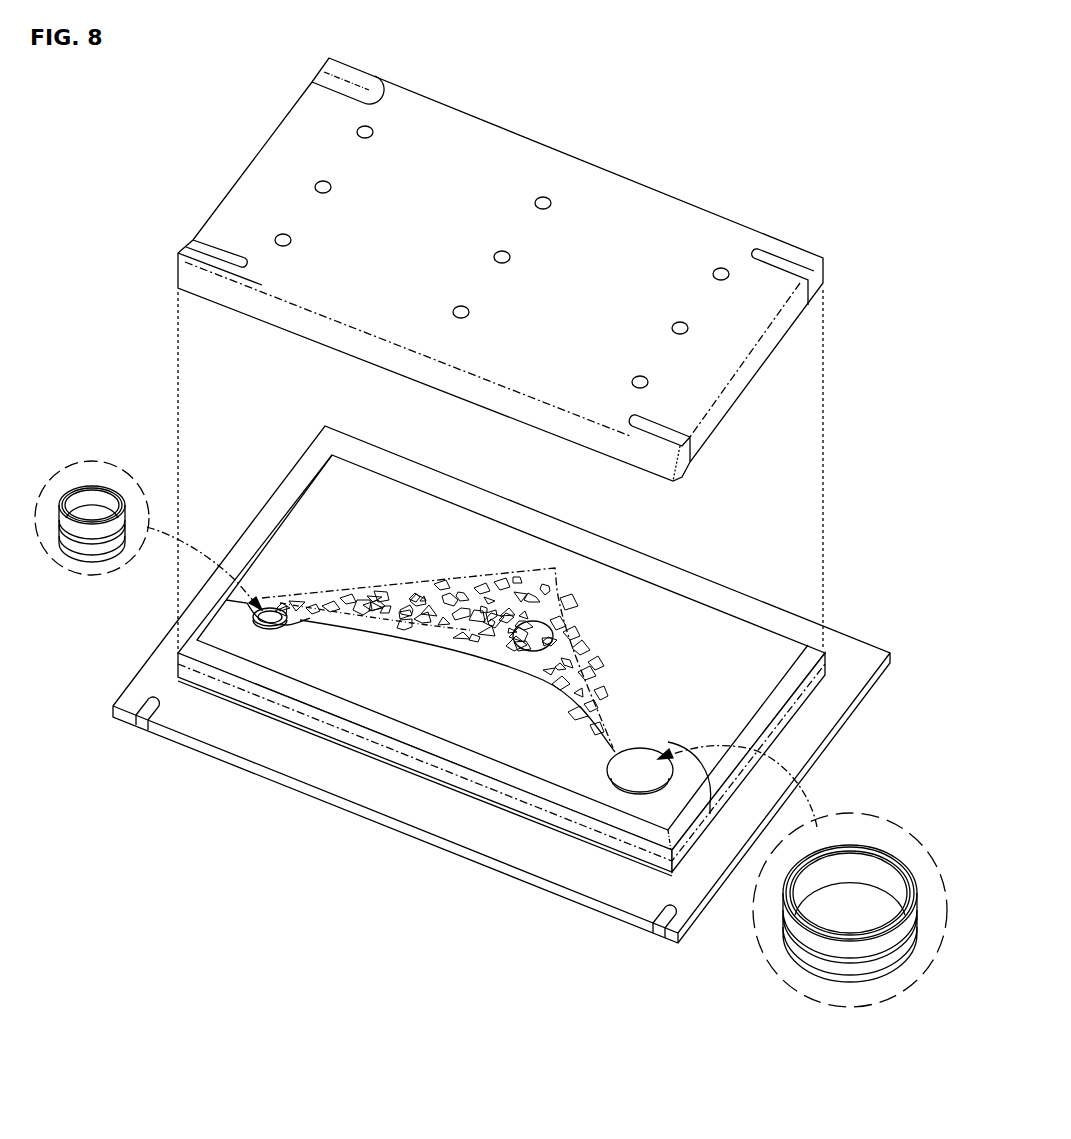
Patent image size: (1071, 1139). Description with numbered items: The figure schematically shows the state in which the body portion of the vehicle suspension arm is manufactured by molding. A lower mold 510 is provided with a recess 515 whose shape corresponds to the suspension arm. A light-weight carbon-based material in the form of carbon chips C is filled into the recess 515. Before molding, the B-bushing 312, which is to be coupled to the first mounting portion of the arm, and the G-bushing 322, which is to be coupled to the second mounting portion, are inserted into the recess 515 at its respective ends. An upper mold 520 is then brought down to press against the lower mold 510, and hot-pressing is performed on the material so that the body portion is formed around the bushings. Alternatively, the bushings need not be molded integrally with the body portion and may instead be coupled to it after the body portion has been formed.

The lower mold 510 is at (280, 755).
The recess 515 is at (312, 605).
The upper mold 520 is at (557, 167).
The B-bushing 312 is at (73, 556).
The G-bushing 322 is at (812, 978).
The carbon chip C is at (596, 667).